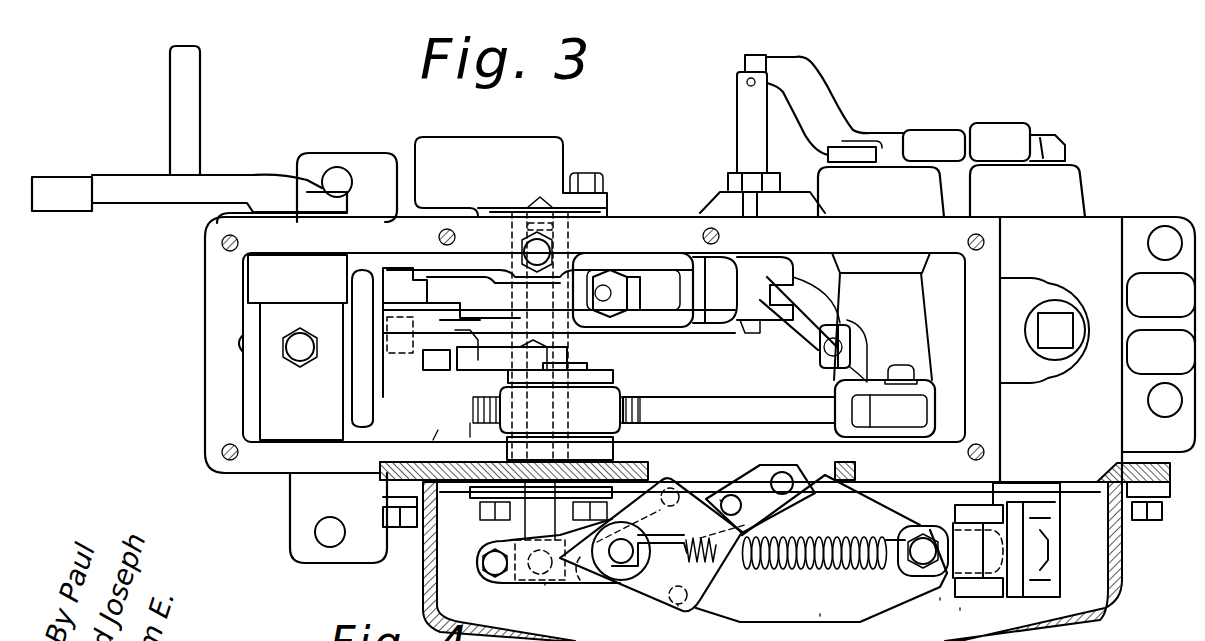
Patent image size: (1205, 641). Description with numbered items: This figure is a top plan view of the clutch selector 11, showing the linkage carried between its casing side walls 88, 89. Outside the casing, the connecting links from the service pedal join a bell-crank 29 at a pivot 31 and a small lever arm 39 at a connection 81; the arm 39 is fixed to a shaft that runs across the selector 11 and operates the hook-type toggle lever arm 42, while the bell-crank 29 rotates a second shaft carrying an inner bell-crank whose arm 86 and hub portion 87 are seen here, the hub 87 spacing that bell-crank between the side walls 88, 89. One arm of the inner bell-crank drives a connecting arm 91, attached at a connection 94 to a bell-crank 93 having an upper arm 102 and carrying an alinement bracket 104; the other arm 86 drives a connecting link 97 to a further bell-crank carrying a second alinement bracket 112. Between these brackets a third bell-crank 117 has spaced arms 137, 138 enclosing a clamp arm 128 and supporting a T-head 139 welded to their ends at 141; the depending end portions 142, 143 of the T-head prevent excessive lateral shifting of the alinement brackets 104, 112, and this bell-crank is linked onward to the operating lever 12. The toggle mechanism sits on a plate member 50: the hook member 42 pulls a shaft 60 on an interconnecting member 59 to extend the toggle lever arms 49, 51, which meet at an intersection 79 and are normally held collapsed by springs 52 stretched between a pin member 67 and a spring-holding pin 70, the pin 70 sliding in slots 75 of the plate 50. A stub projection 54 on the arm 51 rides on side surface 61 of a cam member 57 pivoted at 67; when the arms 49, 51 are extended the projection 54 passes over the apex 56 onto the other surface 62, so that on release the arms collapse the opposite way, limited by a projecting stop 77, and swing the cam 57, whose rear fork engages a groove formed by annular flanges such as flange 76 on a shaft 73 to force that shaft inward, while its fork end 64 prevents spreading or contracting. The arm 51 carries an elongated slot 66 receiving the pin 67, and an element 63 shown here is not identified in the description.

The clutch selector 11 is at (1082, 190).
The operating lever 12 is at (128, 195).
The bell-crank 29 is at (830, 108).
The connection of link to bell-crank 31 is at (745, 57).
The lever arm 39 is at (1040, 135).
The hook-type toggle lever arm 42 is at (985, 505).
The toggle lever arm 49 is at (870, 510).
The plate member 50 is at (820, 615).
The toggle lever arm 51 is at (760, 470).
The spring 52 is at (830, 565).
The stub projection 54 is at (728, 495).
The apex 56 is at (745, 528).
The cam member 57 is at (705, 590).
The interconnecting member 59 is at (940, 600).
The shaft 60 is at (1040, 562).
The side surface 61 is at (720, 500).
The side surface 62 is at (720, 575).
The link 63 is at (510, 585).
The end of toggle 64 is at (480, 563).
The elongated slot 66 is at (580, 582).
The pin member 67 is at (647, 522).
The spring-holding pin 70 is at (927, 540).
The shaft 73 is at (533, 520).
The slots 75 is at (960, 610).
The annular flange 76 is at (545, 585).
The projecting stop 77 is at (660, 498).
The intersection of toggle arms 79 is at (783, 470).
The connection of link to arm 81 is at (1000, 123).
The arm of bell-crank 86 is at (797, 292).
The hub portion 87 is at (915, 335).
The casing side wall 88 is at (935, 432).
The casing side wall 89 is at (893, 217).
The connecting arm 91 is at (750, 405).
The bell-crank 93 is at (510, 360).
The connection 94 is at (585, 365).
The connecting link 97 is at (652, 275).
The upper arm 102 is at (615, 378).
The alinement bracket 104 is at (423, 288).
The alinement bracket 112 is at (435, 440).
The third bell-crank 117 is at (500, 326).
The clamp arm 128 is at (470, 405).
The arm of bell-crank 137 is at (445, 300).
The arm of bell-crank 138 is at (470, 423).
The T-head 139 is at (358, 319).
The weld 141 is at (383, 307).
The depending end portion 142 is at (397, 273).
The depending end portion 143 is at (377, 446).